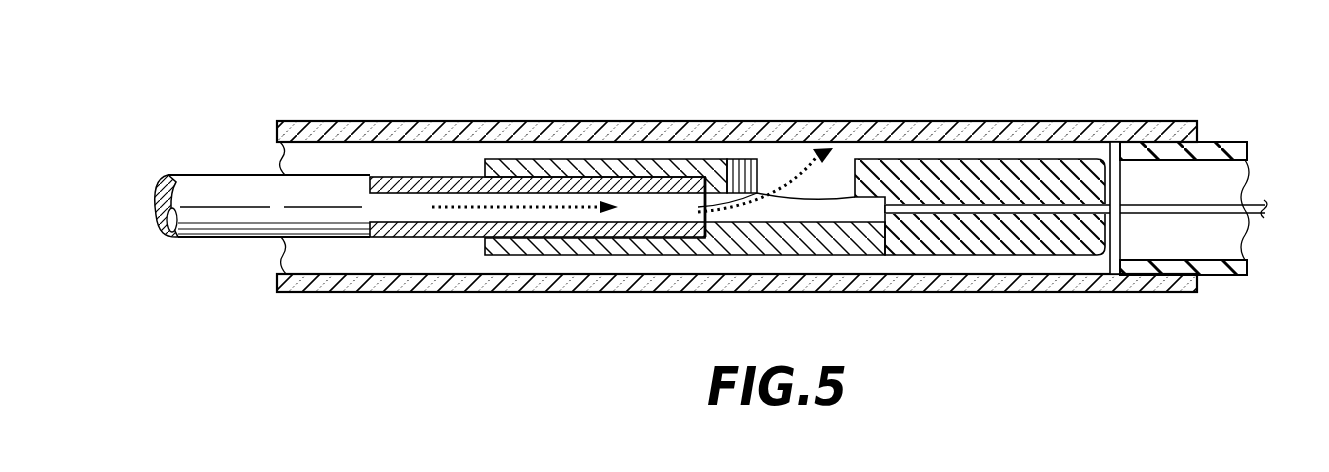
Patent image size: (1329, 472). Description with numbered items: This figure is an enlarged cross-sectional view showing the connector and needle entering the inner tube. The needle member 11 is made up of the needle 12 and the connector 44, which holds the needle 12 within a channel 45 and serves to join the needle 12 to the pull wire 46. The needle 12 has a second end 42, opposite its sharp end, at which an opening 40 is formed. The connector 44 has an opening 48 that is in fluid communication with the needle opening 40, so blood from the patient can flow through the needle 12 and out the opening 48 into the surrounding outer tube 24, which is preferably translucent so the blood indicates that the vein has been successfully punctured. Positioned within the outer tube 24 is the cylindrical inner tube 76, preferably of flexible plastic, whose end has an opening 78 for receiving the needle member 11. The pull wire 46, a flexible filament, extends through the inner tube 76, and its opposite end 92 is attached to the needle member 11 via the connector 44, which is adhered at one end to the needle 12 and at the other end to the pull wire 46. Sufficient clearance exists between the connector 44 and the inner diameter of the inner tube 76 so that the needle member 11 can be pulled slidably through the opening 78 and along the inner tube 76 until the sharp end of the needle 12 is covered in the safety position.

The needle member 11 is at (228, 230).
The needle 12 is at (241, 190).
The outer tube 24 is at (538, 287).
The opening 40 is at (751, 180).
The second end 42 is at (686, 178).
The connector 44 is at (955, 170).
The channel 45 is at (474, 178).
The pull wire 46 is at (1253, 200).
The opening 48 is at (833, 178).
The inner tube 76 is at (1213, 272).
The opening 78 is at (1115, 167).
The opposite end 92 is at (927, 213).